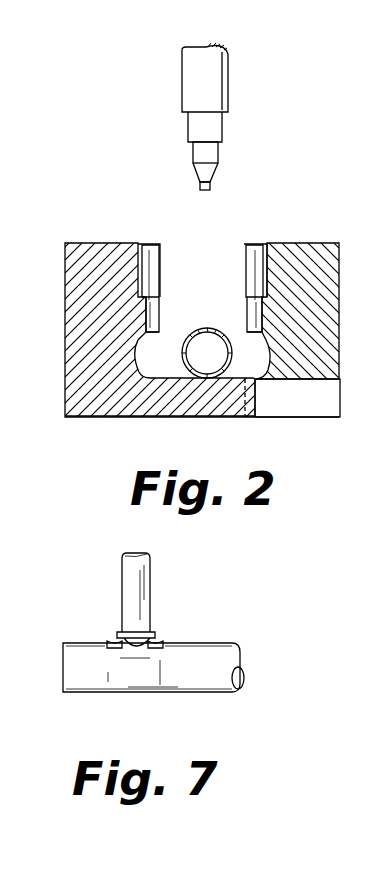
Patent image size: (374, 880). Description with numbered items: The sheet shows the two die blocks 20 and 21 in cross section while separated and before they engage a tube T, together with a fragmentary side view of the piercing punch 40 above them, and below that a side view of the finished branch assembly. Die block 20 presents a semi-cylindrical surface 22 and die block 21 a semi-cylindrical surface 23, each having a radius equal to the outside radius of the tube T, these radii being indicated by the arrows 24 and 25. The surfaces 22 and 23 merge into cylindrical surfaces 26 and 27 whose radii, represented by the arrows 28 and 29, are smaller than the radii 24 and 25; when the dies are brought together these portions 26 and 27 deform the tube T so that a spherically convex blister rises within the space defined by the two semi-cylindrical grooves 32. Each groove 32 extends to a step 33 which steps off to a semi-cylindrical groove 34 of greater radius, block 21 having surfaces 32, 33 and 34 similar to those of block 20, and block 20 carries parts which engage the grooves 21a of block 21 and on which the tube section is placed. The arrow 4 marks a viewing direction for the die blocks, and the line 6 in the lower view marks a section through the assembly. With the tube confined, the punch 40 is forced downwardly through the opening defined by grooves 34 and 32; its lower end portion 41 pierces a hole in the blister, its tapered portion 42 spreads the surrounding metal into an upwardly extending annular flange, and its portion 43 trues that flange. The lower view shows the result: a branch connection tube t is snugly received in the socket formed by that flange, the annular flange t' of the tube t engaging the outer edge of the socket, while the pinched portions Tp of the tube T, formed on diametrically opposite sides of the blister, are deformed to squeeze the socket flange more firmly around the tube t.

In FIG. 2, the direction arrow 4 is at (200, 280).
In FIG. 7, the section line 6- 6 is at (136, 713).
In FIG. 2, the die block 20 is at (65, 307).
In FIG. 2, the die block 21 is at (339, 283).
In FIG. 2, the grooves 21a is at (315, 408).
In FIG. 2, the semi-cylindrical surface 22 is at (132, 373).
In FIG. 2, the semi-cylindrical surface 23 is at (268, 372).
In FIG. 2, the radius arrow 24 is at (146, 362).
In FIG. 2, the radius arrow 25 is at (265, 376).
In FIG. 2, the cylindrical surface 26 is at (153, 337).
In FIG. 2, the cylindrical surface 27 is at (247, 337).
In FIG. 2, the radius arrow 28 is at (139, 341).
In FIG. 2, the radius arrow 29 is at (266, 340).
In FIG. 2, the semi-cylindrical groove 32 is at (246, 310).
In FIG. 2, the step 33 is at (156, 292).
In FIG. 2, the semi-cylindrical groove 34 is at (152, 262).
In FIG. 2, the punch 40 is at (229, 92).
In FIG. 2, the lower end portion 41 is at (199, 186).
In FIG. 2, the tapered portion 42 is at (216, 170).
In FIG. 2, the truing portion 43 is at (192, 153).
In FIG. 2, the tube T is at (218, 330).
In FIG. 7, the tube T is at (240, 657).
In FIG. 7, the branch connection tube t is at (143, 592).
In FIG. 7, the annular flange t' is at (146, 625).
In FIG. 7, the pinched portions Tp is at (110, 640).